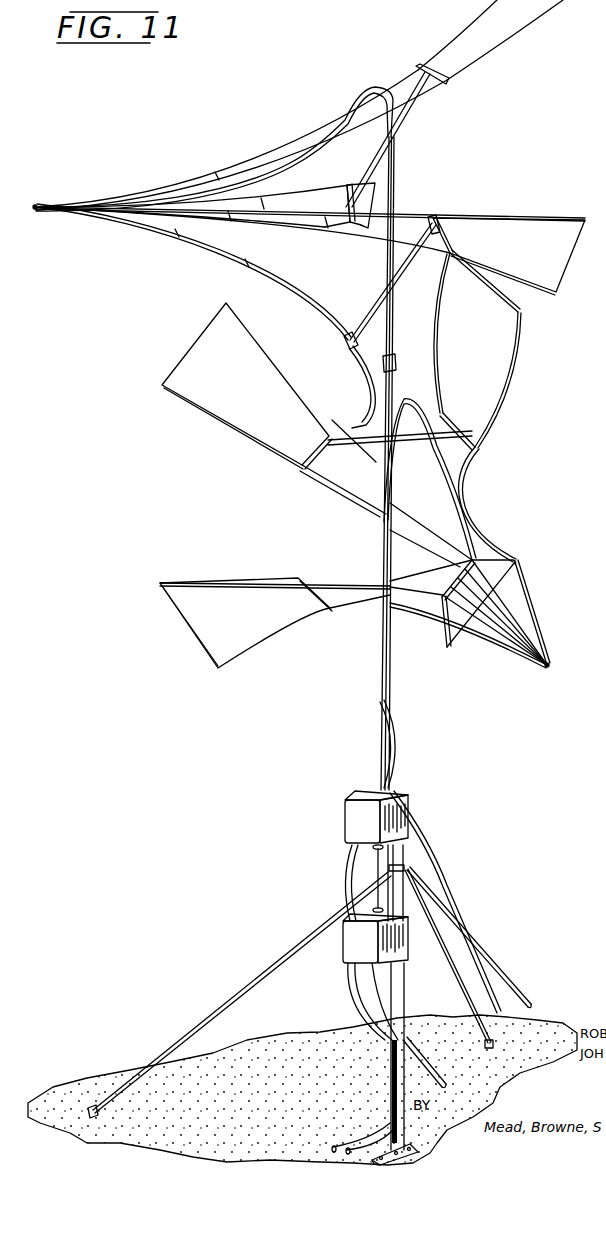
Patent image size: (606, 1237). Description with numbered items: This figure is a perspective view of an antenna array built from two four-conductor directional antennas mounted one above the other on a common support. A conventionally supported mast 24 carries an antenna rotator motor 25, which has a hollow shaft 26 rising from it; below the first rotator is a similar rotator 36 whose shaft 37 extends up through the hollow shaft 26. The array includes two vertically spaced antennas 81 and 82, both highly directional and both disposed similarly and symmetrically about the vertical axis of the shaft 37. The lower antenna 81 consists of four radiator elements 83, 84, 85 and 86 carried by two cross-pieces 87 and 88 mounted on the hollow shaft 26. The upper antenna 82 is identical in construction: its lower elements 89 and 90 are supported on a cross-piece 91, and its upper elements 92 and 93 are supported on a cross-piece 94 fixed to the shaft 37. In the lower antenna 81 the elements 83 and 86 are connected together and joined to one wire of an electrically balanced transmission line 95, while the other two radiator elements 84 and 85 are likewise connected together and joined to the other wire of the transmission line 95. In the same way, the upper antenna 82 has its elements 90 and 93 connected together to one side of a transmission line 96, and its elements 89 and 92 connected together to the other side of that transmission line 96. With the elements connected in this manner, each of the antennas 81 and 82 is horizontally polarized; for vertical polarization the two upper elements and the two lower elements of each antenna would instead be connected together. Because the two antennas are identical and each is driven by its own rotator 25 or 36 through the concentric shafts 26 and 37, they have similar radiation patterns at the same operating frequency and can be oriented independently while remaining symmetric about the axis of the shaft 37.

The mast 24 is at (401, 1002).
The antenna rotator motor 25 is at (413, 800).
The hollow shaft 26 is at (383, 745).
The rotator 36 is at (344, 962).
The shaft 37 is at (394, 198).
The antenna 81 is at (309, 534).
The antenna 82 is at (333, 272).
The radiator element 83 is at (288, 620).
The radiator element 84 is at (452, 620).
The radiator element 85 is at (477, 388).
The radiator element 86 is at (283, 428).
The cross-piece 87 is at (349, 593).
The cross-piece 88 is at (414, 440).
The lower element 89 is at (318, 316).
The lower element 90 is at (530, 235).
The cross-piece 91 is at (421, 256).
The upper element 92 is at (312, 204).
The upper element 93 is at (505, 33).
The cross-piece 94 is at (405, 118).
The transmission line 95 is at (418, 412).
The transmission line 96 is at (352, 98).